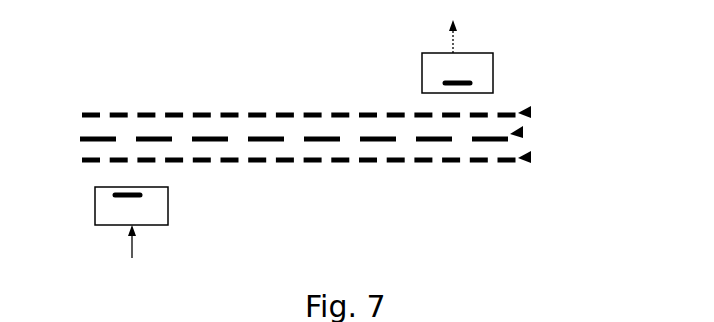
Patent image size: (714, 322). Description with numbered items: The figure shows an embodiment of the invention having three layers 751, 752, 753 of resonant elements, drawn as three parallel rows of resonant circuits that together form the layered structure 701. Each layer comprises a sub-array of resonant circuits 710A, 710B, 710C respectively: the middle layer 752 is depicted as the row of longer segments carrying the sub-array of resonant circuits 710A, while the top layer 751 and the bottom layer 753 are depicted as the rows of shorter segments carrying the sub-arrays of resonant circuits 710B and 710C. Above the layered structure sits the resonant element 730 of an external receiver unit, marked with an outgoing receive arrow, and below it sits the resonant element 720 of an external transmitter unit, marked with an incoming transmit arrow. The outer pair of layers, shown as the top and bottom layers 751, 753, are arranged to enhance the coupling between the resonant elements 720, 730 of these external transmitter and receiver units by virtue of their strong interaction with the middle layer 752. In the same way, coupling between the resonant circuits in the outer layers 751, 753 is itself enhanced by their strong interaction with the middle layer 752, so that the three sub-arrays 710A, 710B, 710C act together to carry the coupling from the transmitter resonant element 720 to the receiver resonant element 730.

The optical waveguide array 701 is at (367, 139).
The sub-array of resonant circuits 710A is at (523, 132).
The sub-array of resonant circuits 710B is at (531, 112).
The sub-array of resonant circuits 710C is at (531, 157).
The resonant element 720 is at (142, 196).
The resonant element 730 is at (443, 83).
The layer 751 is at (81, 111).
The middle layer 752 is at (80, 139).
The layer 753 is at (88, 164).